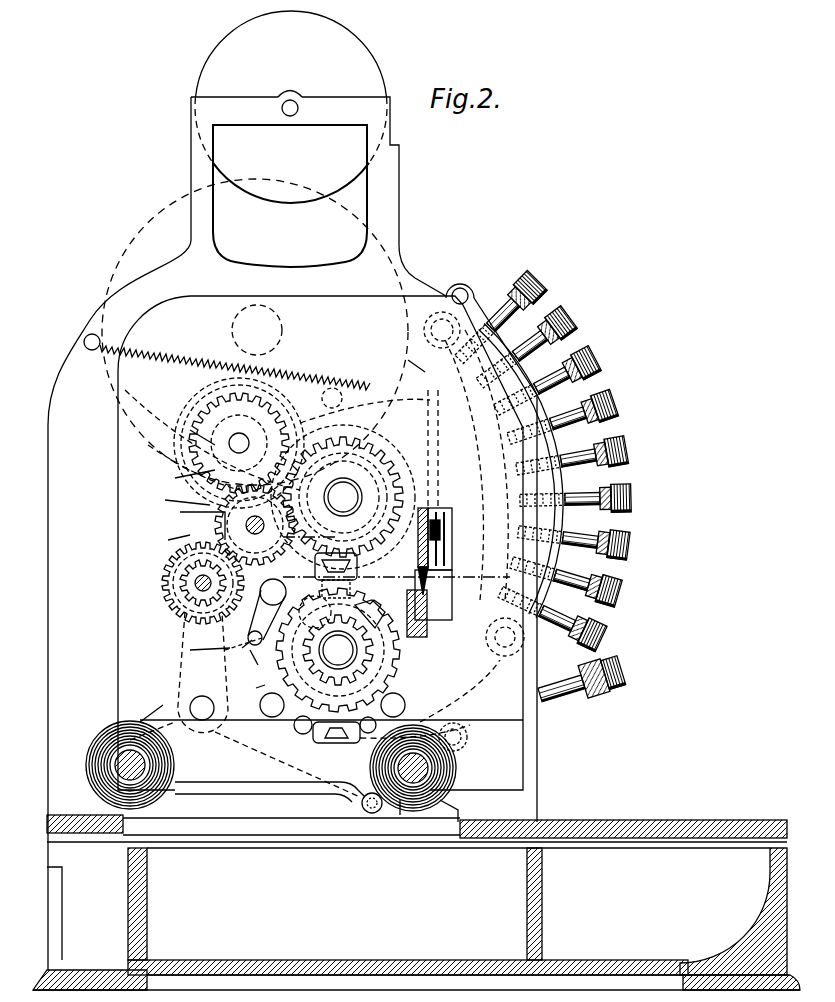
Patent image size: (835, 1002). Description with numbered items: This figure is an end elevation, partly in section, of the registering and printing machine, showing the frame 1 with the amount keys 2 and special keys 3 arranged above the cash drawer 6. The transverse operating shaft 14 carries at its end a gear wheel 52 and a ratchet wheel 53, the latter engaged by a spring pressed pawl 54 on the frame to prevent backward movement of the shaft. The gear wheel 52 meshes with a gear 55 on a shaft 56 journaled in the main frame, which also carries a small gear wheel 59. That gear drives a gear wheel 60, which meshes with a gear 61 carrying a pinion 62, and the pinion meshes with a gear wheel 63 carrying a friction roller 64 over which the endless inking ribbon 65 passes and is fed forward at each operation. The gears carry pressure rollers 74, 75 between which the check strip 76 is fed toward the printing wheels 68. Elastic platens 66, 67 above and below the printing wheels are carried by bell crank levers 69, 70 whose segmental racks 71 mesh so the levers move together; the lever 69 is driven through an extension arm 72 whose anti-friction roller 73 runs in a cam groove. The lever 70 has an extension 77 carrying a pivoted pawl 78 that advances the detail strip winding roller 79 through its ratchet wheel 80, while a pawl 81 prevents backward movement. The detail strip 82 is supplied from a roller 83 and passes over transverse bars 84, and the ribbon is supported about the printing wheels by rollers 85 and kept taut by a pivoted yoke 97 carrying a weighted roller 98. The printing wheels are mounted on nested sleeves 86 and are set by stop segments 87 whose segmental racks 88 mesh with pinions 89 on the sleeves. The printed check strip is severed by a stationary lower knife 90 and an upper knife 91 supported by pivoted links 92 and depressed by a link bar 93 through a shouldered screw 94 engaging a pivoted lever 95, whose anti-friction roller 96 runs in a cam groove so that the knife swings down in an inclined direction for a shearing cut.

The frame 1 is at (105, 432).
The amount keys 2 is at (575, 326).
The special keys 3 is at (612, 686).
The cash drawer 6 is at (416, 902).
The transverse operating shaft 14 is at (340, 496).
The gear wheel 52 is at (380, 455).
The ratchet wheel 53 is at (380, 502).
The spring pressed pawl 54 is at (380, 535).
The gear 55 is at (200, 403).
The shaft 56 is at (239, 443).
The small gear wheel 59 is at (182, 475).
The gear wheel 60 is at (166, 539).
The gear 61 is at (183, 568).
The pinion 62 is at (170, 588).
The gear wheel 63 is at (238, 649).
The friction roller 64 is at (267, 612).
The endless inking ribbon 65 is at (249, 686).
The elastic platen 66 is at (357, 566).
The elastic platen 67 is at (337, 743).
The printing wheels 68 is at (338, 650).
The bell crank lever 69 is at (262, 534).
The bell crank lever 70 is at (195, 672).
The segmental racks 71 is at (195, 648).
The extension arm 72 is at (177, 499).
The anti-friction roller 73 is at (190, 430).
The pressure roller 74 is at (188, 523).
The pressure roller 75 is at (190, 582).
The check strip 76 is at (186, 466).
The extension 77 is at (452, 725).
The pivoted pawl 78 is at (468, 740).
The detail strip winding roller 79 is at (456, 769).
The ratchet wheel 80 is at (460, 795).
The pawl 81 is at (356, 798).
The detail strip 82 is at (152, 716).
The roller 83 is at (175, 790).
The transverse bars 84 is at (303, 734).
The rollers 85 is at (262, 704).
The nested sleeves 86 is at (322, 655).
The stop segments 87 is at (455, 503).
The segmental racks 88 is at (312, 616).
The pinions 89 is at (370, 614).
The lower knife 90 is at (430, 625).
The upper knife 91 is at (450, 572).
The pivoted links 92 is at (448, 550).
The link bar 93 is at (452, 542).
The shouldered screw 94 is at (403, 360).
The pivoted lever 95 is at (343, 477).
The anti-friction roller 96 is at (228, 403).
The pivoted yoke 97 is at (231, 637).
The weighted roller 98 is at (251, 662).